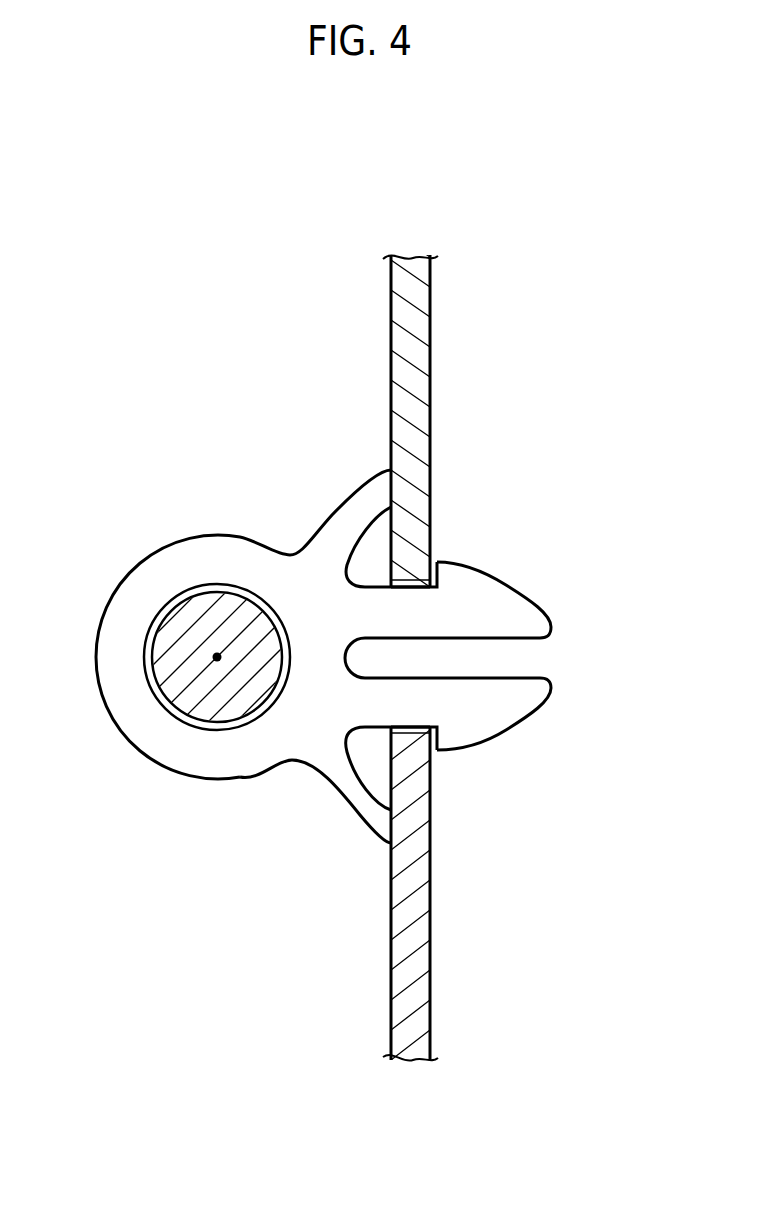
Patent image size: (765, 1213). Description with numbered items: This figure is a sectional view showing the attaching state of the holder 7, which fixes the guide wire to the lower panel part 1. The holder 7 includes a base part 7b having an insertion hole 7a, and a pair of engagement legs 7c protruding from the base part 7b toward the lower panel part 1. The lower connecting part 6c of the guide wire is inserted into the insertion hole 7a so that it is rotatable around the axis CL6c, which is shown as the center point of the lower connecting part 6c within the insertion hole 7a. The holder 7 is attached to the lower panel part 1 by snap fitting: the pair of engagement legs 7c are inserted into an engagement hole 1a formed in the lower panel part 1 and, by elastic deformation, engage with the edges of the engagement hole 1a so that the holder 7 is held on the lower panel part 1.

The lower panel part 1 is at (391, 395).
The engagement hole 1a is at (418, 590).
The holder 7 is at (309, 682).
The insertion hole 7a is at (176, 598).
The base part 7b is at (245, 778).
The engagement legs 7c is at (516, 607).
The lower connecting part 6c is at (217, 730).
The axis CL6c is at (210, 664).